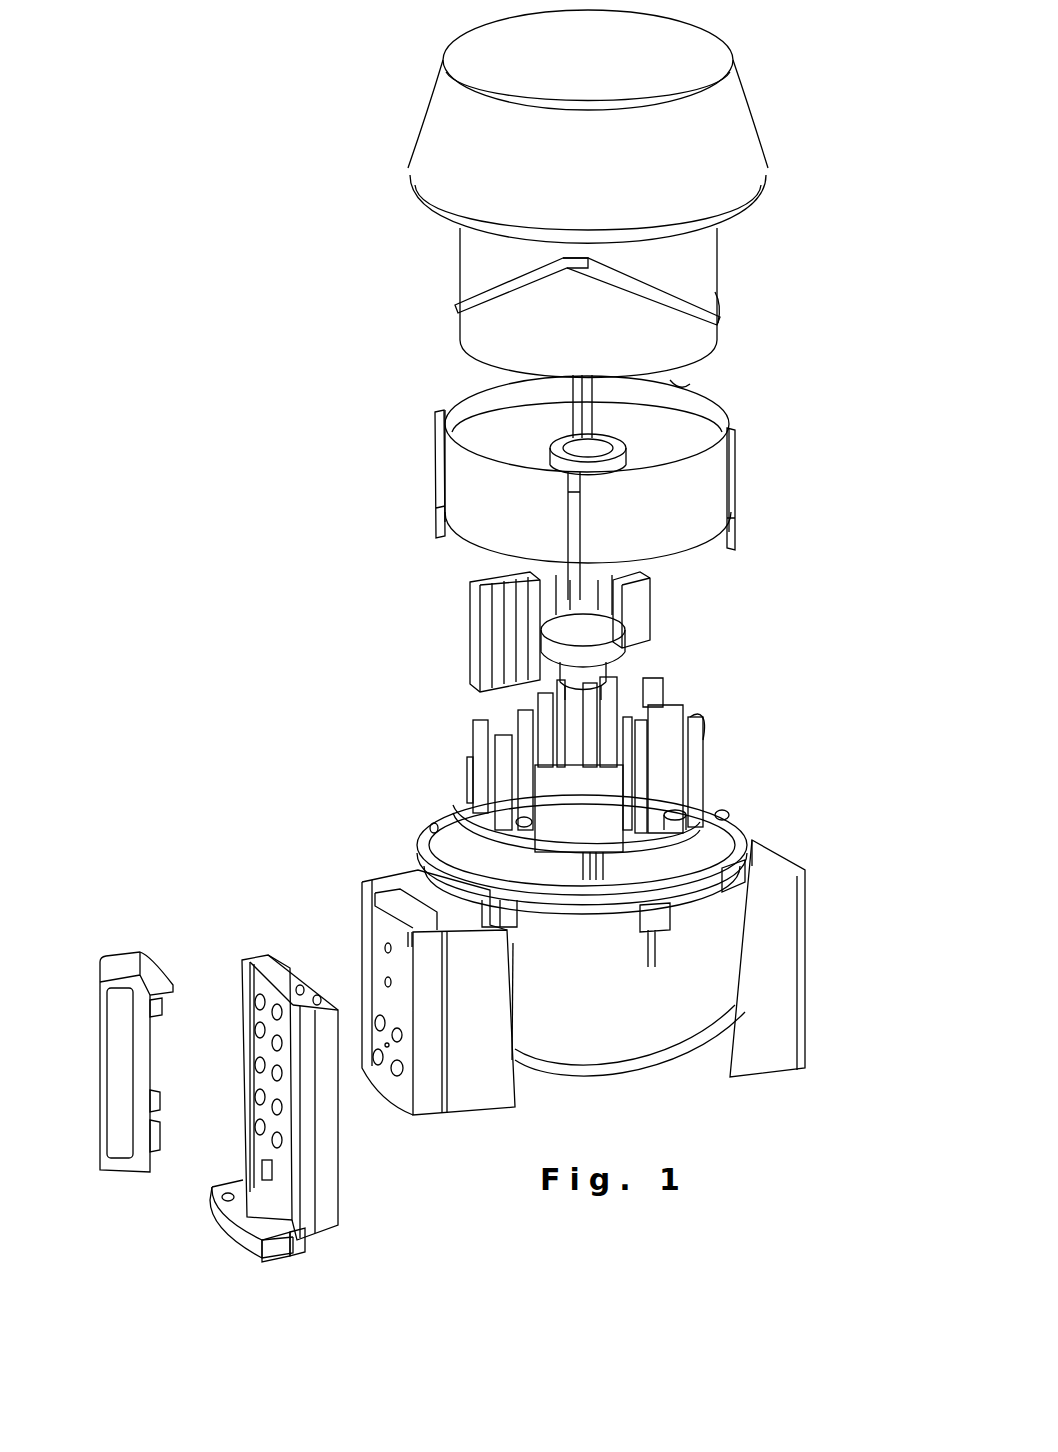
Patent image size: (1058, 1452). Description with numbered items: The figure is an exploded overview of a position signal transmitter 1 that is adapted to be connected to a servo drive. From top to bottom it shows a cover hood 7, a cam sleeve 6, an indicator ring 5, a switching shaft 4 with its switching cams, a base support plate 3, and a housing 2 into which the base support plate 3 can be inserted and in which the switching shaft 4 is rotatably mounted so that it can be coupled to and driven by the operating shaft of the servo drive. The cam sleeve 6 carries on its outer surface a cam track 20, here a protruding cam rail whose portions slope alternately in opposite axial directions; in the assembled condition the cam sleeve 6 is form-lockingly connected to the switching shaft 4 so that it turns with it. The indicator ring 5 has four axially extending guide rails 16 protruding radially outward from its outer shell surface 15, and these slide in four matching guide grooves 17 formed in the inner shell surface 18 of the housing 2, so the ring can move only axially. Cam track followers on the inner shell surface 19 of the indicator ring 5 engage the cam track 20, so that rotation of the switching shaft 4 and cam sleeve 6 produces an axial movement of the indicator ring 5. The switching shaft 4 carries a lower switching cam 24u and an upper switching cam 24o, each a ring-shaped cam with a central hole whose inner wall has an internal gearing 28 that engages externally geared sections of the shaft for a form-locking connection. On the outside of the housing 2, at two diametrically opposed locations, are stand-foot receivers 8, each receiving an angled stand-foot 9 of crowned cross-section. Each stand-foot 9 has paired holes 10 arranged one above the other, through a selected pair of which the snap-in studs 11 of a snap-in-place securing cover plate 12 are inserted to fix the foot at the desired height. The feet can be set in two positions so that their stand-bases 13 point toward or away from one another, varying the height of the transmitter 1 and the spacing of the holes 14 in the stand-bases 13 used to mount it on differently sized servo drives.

The position signal transmitter 1 is at (783, 566).
The housing 2 is at (708, 960).
The base support plate 3 is at (653, 828).
The switching shaft 4 is at (616, 668).
The indicator ring 5 is at (720, 398).
The cam sleeve 6 is at (718, 249).
The cover hood 7 is at (760, 118).
The stand-foot receiver 8 is at (775, 993).
The stand-foot 9 is at (325, 1152).
The paired holes 10 is at (285, 1110).
The snap-in bolts or studs 11 is at (152, 1106).
The snap-in-place securing cover plate 12 is at (120, 1165).
The stand-base 13 is at (297, 1250).
The holes in the stand bases 14 is at (272, 1236).
The outer shell surface of the indicator ring 15 is at (703, 492).
The guide rails 16 is at (740, 458).
The guide grooves 17 is at (740, 815).
The inner shell surface of the housing 18 is at (715, 810).
The inner shell surface of the indicator ring 19 is at (690, 384).
The cam track 20 is at (700, 283).
The upper switching cam 24o is at (617, 450).
The lower switching cam 24u is at (596, 636).
The internal gearing 28 is at (598, 438).